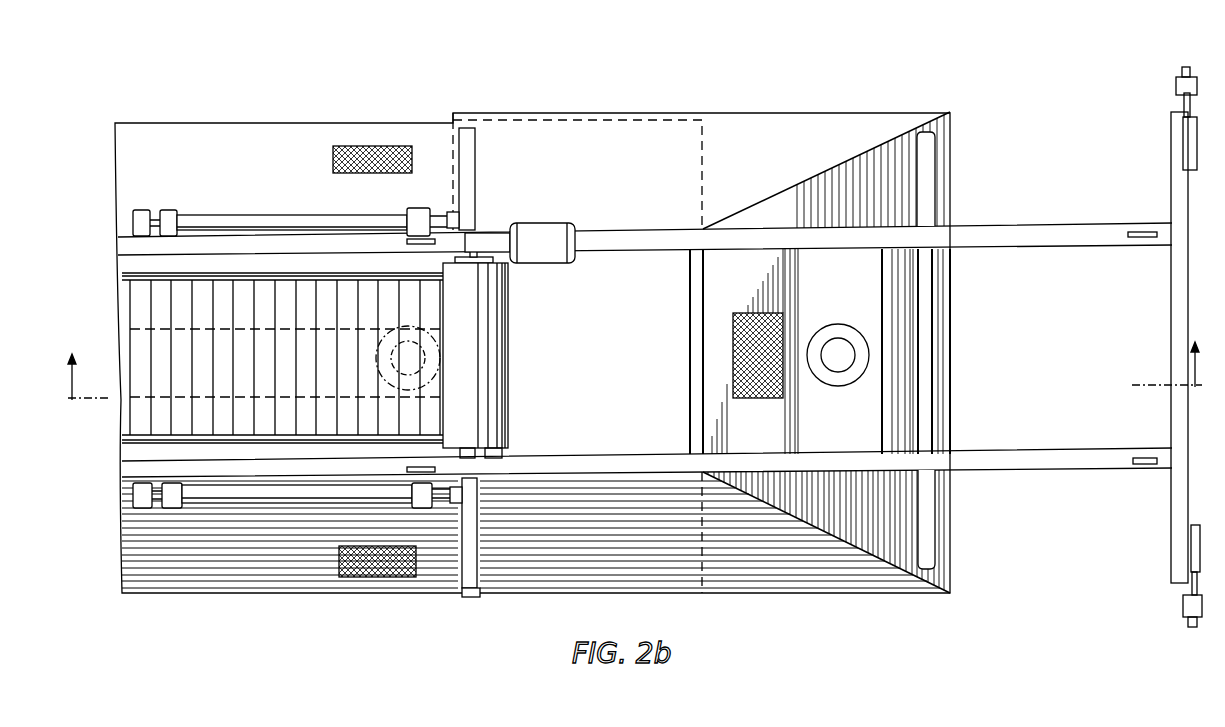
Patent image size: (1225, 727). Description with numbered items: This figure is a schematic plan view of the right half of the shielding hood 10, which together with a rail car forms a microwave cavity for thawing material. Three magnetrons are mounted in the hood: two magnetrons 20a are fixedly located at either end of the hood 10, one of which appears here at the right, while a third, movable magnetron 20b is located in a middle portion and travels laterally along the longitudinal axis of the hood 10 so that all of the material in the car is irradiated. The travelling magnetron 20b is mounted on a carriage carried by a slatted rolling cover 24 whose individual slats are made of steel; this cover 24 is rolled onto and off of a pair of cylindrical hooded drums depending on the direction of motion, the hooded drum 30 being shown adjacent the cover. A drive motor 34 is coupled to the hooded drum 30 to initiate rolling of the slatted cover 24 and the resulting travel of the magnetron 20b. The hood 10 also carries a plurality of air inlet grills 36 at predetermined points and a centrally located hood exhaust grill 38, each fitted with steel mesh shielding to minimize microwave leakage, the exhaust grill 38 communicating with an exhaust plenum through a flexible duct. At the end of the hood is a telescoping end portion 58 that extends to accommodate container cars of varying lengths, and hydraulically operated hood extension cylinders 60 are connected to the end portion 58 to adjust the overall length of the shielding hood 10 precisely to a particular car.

The shielding hood 10 is at (638, 347).
The magnetron 20a is at (838, 323).
The movable magnetron 20b is at (438, 348).
The slatted rolling cover 24 is at (137, 298).
The hooded drum 30 is at (508, 403).
The drive motor 34 is at (550, 232).
The air inlet grill 36 is at (388, 578).
The hood exhaust grill 38 is at (358, 145).
The telescoping end portion 58 is at (791, 111).
The hood extension cylinder 60 is at (254, 220).